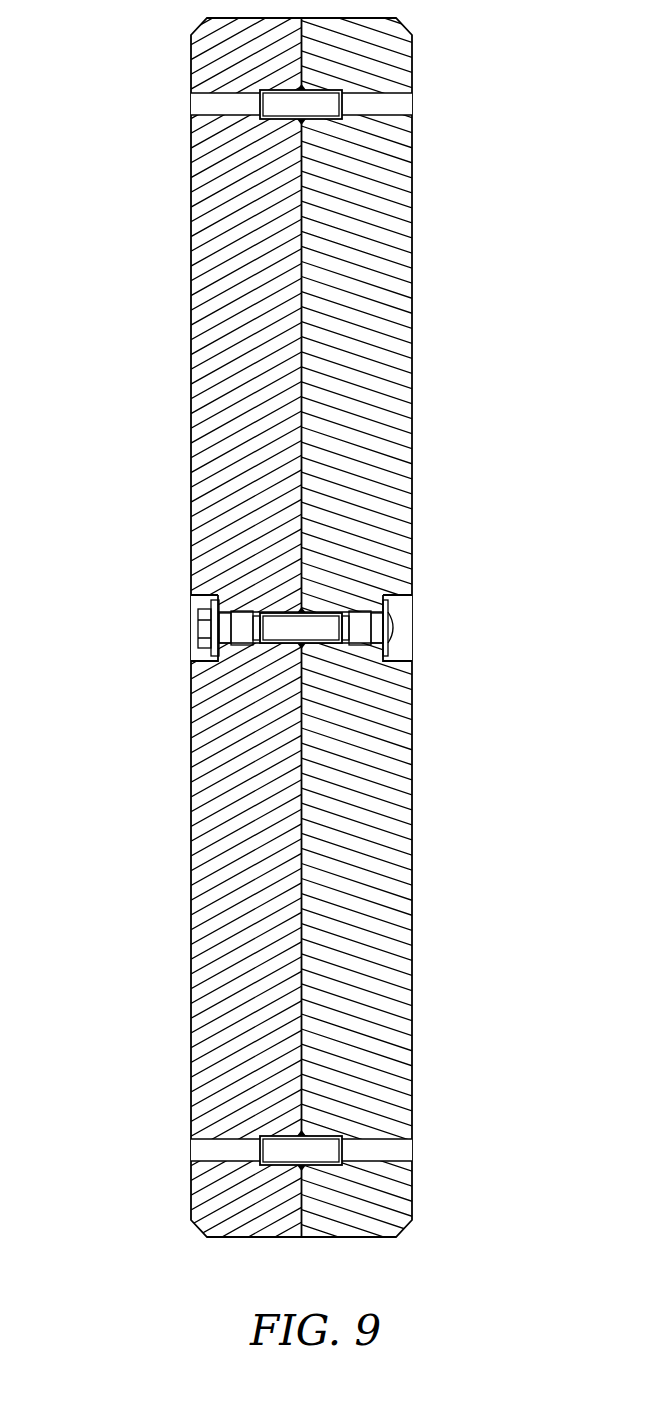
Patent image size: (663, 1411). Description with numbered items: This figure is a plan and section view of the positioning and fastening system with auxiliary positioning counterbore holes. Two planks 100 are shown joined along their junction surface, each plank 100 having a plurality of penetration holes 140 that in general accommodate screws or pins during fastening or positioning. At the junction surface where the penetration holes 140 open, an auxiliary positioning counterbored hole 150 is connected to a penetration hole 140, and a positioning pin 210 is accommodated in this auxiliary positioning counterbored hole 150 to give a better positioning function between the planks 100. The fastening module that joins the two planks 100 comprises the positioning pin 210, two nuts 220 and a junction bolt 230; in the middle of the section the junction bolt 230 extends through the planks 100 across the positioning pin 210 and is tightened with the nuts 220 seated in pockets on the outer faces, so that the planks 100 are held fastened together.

The plank 100 is at (203, 317).
The penetration hole 140 is at (408, 102).
The auxiliary positioning counterbored hole 150 is at (340, 92).
The positioning pin 210 is at (265, 105).
The nut 220 is at (414, 603).
The junction bolt 230 is at (177, 600).